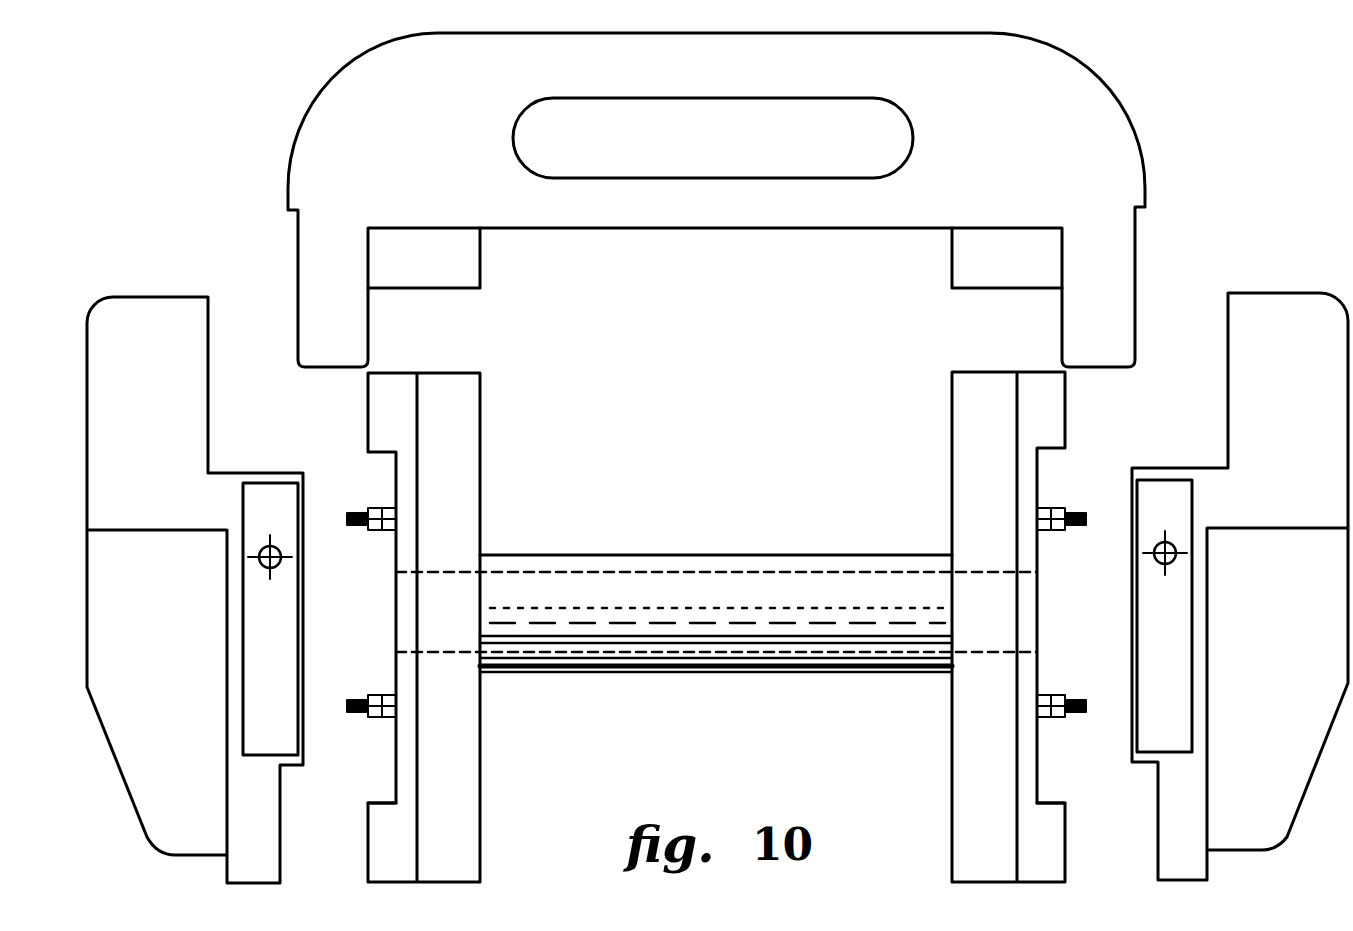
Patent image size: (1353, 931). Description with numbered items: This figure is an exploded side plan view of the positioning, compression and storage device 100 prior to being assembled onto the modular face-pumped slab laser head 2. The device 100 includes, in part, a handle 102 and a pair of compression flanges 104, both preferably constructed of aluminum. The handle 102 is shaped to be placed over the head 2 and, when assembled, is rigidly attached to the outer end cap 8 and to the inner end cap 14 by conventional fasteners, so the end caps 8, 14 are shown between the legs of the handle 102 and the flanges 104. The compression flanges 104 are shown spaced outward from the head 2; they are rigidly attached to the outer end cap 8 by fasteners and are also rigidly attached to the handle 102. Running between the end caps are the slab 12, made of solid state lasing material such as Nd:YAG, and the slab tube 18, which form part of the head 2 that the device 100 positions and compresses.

The positioning, compression and storage device 100 is at (739, 200).
The handle 102 is at (290, 178).
The modular face-pumped slab laser head 2 is at (781, 555).
The compression flanges 104 is at (717, 588).
The inner end cap 14 is at (716, 627).
The outer end cap 8 is at (368, 855).
The slab 12 is at (672, 588).
The slab tube 18 is at (712, 668).